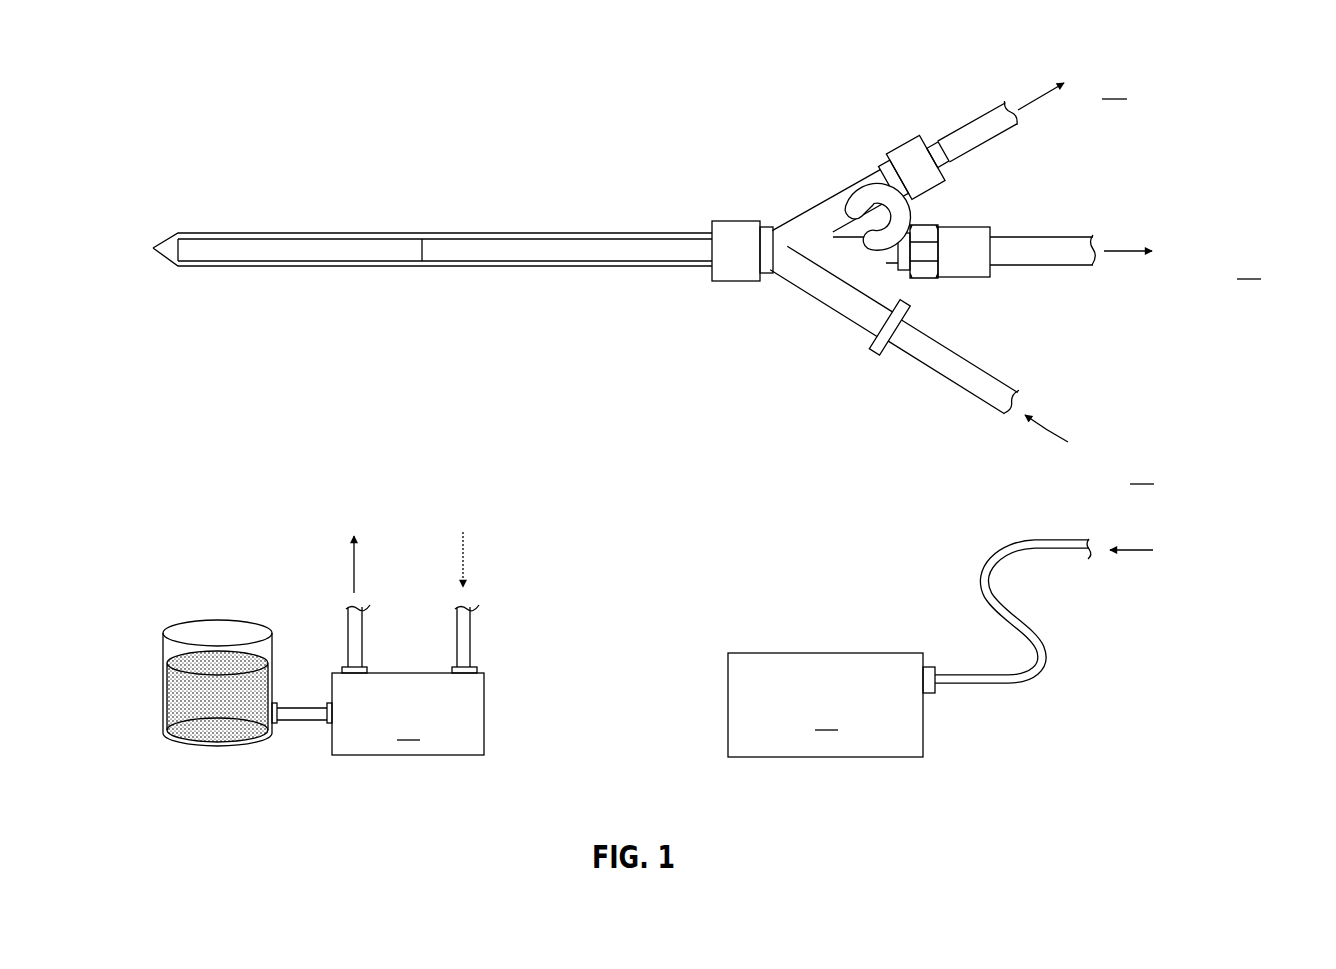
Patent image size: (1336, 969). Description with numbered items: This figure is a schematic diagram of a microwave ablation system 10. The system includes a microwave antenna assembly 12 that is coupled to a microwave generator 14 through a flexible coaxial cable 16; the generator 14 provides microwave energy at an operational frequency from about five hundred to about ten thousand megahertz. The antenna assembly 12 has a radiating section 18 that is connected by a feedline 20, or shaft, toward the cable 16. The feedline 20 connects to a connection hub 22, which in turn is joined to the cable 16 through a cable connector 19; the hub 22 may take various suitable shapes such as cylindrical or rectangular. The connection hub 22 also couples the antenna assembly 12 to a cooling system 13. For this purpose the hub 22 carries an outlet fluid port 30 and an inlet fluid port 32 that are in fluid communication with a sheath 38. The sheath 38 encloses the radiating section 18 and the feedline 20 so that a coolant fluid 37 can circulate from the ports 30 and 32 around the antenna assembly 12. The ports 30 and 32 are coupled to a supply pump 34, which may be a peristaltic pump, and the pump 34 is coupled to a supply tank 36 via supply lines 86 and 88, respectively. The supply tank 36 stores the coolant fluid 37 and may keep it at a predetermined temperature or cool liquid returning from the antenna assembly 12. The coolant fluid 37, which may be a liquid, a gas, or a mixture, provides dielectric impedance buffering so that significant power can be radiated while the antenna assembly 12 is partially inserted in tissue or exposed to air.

The microwave ablation system 10 is at (255, 89).
The microwave antenna assembly 12 is at (687, 161).
The cooling system 13 is at (299, 543).
The microwave generator 14 is at (831, 705).
The flexible coaxial cable 16 is at (1038, 237).
The radiating section 18 is at (282, 236).
The cable connector 19 is at (961, 227).
The feedline 20 is at (535, 236).
The connection hub 22 is at (805, 316).
The outlet fluid port 30 is at (910, 150).
The inlet fluid port 32 is at (873, 341).
The supply pump 34 is at (408, 714).
The supply tank 36 is at (165, 680).
The coolant fluid 37 is at (170, 712).
The sheath 38 is at (687, 233).
The supply line 86 is at (983, 122).
The supply line 88 is at (955, 374).